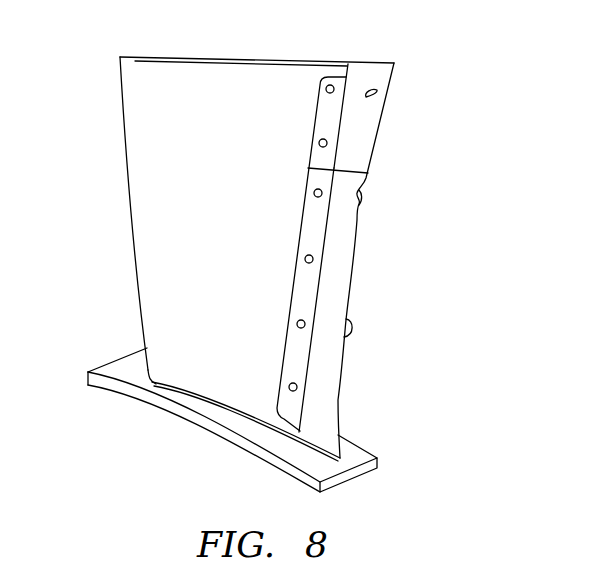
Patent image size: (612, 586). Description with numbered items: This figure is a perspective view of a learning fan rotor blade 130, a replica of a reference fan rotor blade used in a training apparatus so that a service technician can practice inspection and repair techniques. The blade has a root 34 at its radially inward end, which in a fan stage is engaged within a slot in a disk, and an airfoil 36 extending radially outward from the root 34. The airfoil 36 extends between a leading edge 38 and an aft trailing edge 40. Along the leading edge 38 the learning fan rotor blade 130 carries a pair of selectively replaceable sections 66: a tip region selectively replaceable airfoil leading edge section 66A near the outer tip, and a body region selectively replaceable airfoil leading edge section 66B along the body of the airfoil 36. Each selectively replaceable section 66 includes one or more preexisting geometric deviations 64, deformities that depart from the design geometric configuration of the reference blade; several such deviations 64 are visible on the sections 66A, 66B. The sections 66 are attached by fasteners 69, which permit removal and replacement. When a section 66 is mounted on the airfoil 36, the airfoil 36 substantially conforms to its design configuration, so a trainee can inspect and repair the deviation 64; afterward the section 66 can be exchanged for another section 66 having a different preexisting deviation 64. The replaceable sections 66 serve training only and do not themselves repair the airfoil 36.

The root 34 is at (140, 403).
The airfoil 36 is at (245, 216).
The leading edge 38 is at (353, 258).
The aft trailing edge 40 is at (127, 182).
The geometric deviation 64 is at (378, 97).
The selectively replaceable section 66 is at (425, 248).
The tip region selectively replaceable airfoil leading edge section 66A is at (372, 123).
The body region selectively replaceable airfoil leading edge section 66B is at (332, 407).
The fasteners 69 is at (327, 90).
The learning fan rotor blade 130 is at (398, 147).